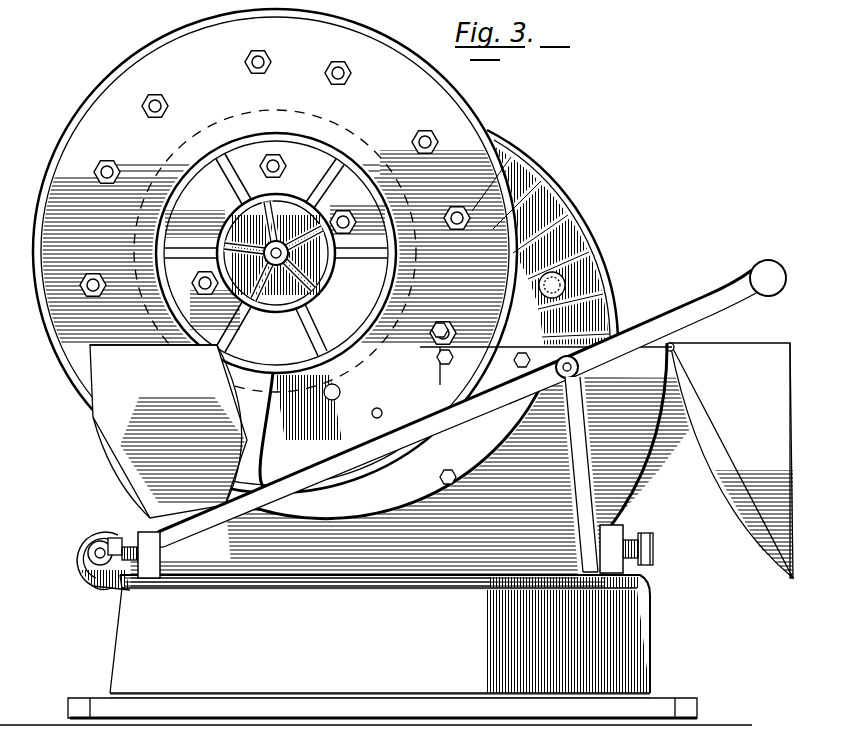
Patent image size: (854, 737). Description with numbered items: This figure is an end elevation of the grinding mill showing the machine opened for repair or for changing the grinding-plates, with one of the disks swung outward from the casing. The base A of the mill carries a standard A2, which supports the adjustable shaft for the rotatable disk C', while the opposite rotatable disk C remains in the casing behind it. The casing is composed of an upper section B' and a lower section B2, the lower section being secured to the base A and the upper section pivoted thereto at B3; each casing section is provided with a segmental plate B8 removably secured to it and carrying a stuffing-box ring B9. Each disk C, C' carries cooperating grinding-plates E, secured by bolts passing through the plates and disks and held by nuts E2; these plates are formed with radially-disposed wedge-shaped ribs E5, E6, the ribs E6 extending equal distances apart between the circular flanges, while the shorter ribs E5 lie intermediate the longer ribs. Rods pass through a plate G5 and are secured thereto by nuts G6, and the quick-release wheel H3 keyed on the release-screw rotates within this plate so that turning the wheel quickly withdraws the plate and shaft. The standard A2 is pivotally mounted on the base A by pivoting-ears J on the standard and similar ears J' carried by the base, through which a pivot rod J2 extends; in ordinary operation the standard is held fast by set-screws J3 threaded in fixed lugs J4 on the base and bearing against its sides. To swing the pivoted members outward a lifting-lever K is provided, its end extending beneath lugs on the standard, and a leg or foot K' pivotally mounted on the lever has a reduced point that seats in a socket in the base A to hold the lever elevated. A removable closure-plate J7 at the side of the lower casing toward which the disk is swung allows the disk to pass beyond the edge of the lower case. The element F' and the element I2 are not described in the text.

The base A is at (376, 650).
The standard A2 is at (270, 462).
The upper section of casing B' is at (732, 461).
The lower section of casing B2 is at (638, 435).
The pivot of upper casing section B3 is at (675, 347).
The segmental plate B8 is at (415, 475).
The stuffing-box ring B9 is at (480, 366).
The rotatable disk C is at (383, 346).
The rotatable disk C' is at (275, 251).
The grinding-plates E is at (583, 263).
The nuts E2 is at (170, 110).
The radial ribs E5 is at (557, 233).
The radial ribs E6 is at (573, 243).
The stud F' is at (592, 294).
The plate G5 is at (340, 213).
The nuts G6 is at (203, 297).
The quick-release wheel H3 is at (318, 150).
The hub I2 is at (278, 258).
The pivoting-ears J is at (121, 533).
The pivoting-ears J' is at (89, 605).
The pivot rod J2 is at (98, 550).
The set-screws J3 is at (670, 538).
The fixed lugs J4 is at (150, 578).
The closure-plate J7 is at (100, 413).
The lifting-lever K is at (470, 403).
The leg or foot K' is at (595, 474).